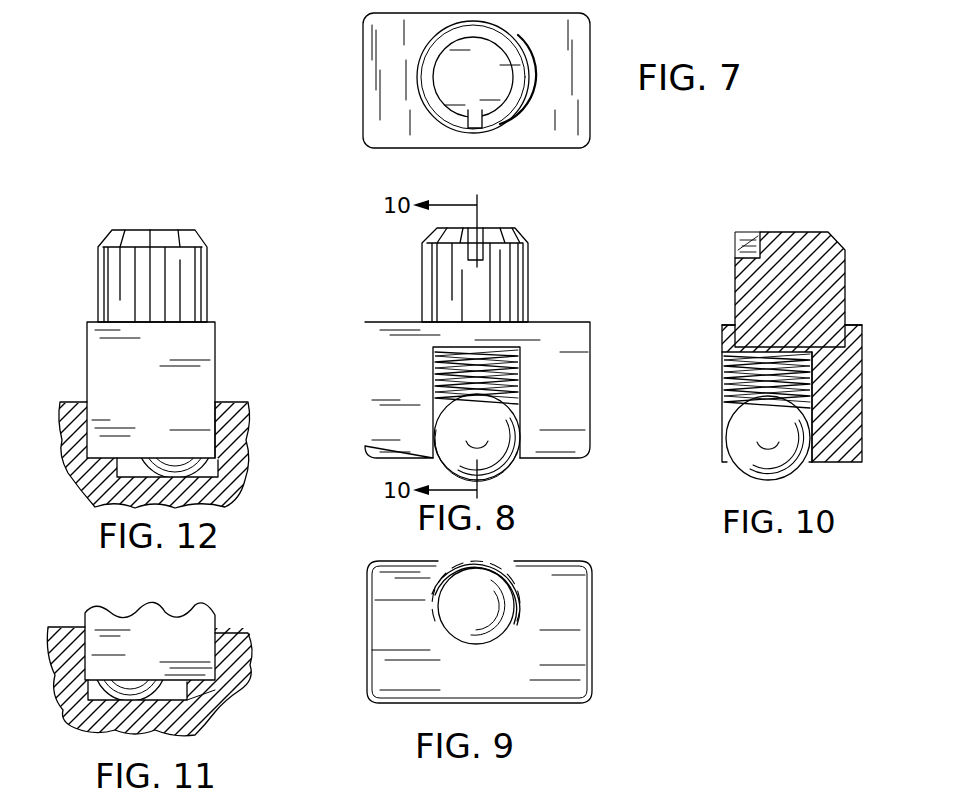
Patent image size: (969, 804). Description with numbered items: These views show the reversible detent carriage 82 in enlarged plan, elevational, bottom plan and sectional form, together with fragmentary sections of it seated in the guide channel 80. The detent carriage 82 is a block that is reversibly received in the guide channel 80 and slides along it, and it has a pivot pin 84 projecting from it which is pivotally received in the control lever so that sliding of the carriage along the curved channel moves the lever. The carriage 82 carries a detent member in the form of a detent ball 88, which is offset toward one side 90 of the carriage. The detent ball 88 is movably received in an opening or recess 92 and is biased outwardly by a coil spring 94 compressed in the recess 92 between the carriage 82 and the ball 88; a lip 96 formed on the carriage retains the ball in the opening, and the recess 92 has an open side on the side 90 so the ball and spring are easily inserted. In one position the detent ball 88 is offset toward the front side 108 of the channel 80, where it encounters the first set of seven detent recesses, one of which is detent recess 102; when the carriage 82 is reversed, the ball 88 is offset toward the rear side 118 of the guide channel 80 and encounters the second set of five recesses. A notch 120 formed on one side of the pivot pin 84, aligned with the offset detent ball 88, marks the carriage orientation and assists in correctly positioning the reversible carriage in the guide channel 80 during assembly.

In FIG. 12, the guide channel 80 is at (113, 378).
In FIG. 11, the guide channel 80 is at (193, 655).
In FIG. 7, the reversible detent carriage 82 is at (363, 64).
In FIG. 8, the reversible detent carriage 82 is at (590, 337).
In FIG. 9, the reversible detent carriage 82 is at (592, 650).
In FIG. 10, the reversible detent carriage 82 is at (862, 335).
In FIG. 12, the reversible detent carriage 82 is at (195, 340).
In FIG. 11, the reversible detent carriage 82 is at (175, 633).
In FIG. 7, the pivot pin 84 is at (458, 70).
In FIG. 8, the pivot pin 84 is at (432, 274).
In FIG. 10, the pivot pin 84 is at (761, 263).
In FIG. 12, the pivot pin 84 is at (185, 282).
In FIG. 8, the detent ball 88 is at (445, 455).
In FIG. 9, the detent ball 88 is at (487, 607).
In FIG. 10, the detent ball 88 is at (790, 478).
In FIG. 12, the detent ball 88 is at (190, 470).
In FIG. 11, the detent ball 88 is at (115, 688).
In FIG. 10, the side of the detent carriage 90 is at (725, 340).
In FIG. 8, the recess 92 is at (433, 375).
In FIG. 10, the recess 92 is at (728, 372).
In FIG. 8, the spring 94 is at (480, 385).
In FIG. 10, the spring 94 is at (810, 392).
In FIG. 8, the lip 96 is at (520, 462).
In FIG. 9, the lip 96 is at (505, 575).
In FIG. 11, the detent recess 102 is at (200, 702).
In FIG. 12, the front side of the channel 108 is at (98, 392).
In FIG. 11, the front side of the channel 108 is at (92, 630).
In FIG. 12, the rear side of the guide channel 118 is at (210, 402).
In FIG. 7, the notch 120 is at (477, 128).
In FIG. 10, the notch 120 is at (742, 250).